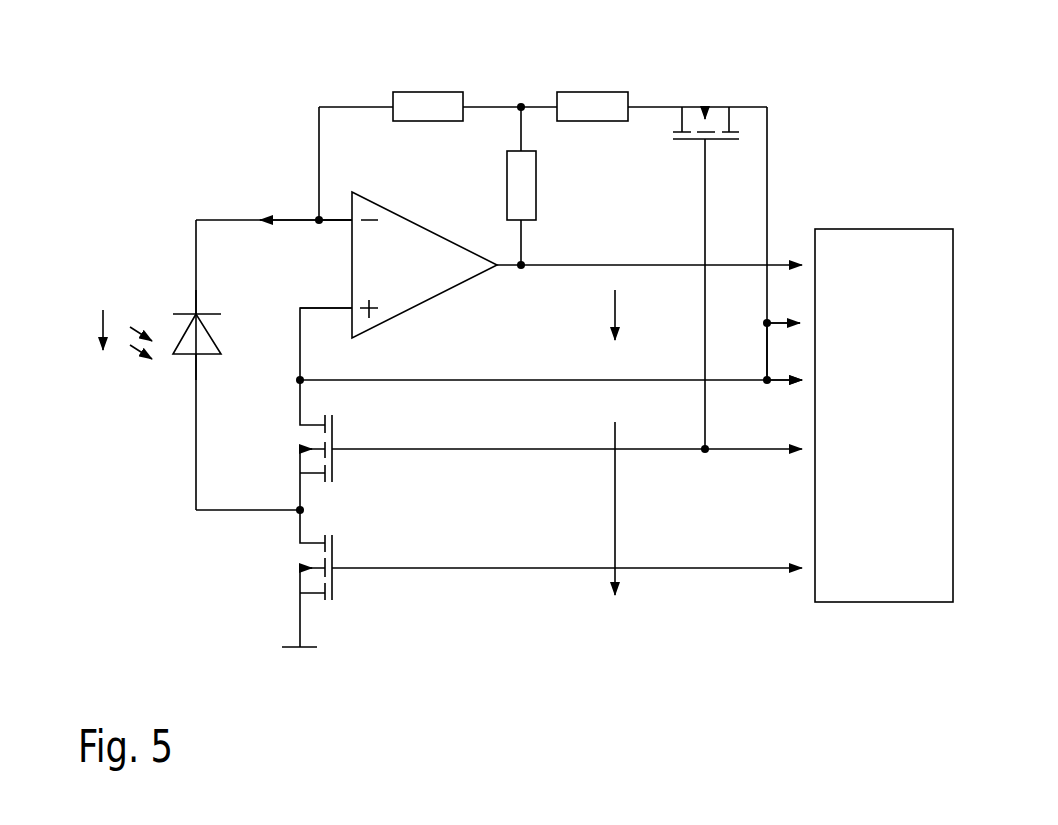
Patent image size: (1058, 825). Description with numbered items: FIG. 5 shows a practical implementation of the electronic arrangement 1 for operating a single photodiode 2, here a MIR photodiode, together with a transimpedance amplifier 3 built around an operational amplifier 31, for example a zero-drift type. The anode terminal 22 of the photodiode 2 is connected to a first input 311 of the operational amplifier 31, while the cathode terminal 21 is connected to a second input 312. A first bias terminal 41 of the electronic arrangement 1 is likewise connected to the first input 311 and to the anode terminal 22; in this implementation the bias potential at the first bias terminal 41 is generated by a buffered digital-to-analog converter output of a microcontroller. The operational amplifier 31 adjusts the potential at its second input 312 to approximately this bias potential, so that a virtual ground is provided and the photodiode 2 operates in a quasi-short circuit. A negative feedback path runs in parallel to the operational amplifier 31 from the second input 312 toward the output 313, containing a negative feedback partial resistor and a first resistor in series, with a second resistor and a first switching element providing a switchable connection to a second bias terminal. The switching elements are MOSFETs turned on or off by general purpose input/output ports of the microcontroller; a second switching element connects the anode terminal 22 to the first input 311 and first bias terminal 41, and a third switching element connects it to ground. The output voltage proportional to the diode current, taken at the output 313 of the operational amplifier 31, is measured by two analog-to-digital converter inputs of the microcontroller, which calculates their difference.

The electronic arrangement 1 is at (166, 93).
The photodiode 2 is at (218, 349).
The cathode terminal 21 is at (182, 299).
The anode terminal 22 is at (182, 372).
The transimpedance amplifier 3 is at (668, 47).
The operational amplifier 31 is at (413, 292).
The first input 311 is at (338, 295).
The second input 312 is at (338, 233).
The output 313 is at (508, 281).
The first bias terminal 41 is at (764, 400).